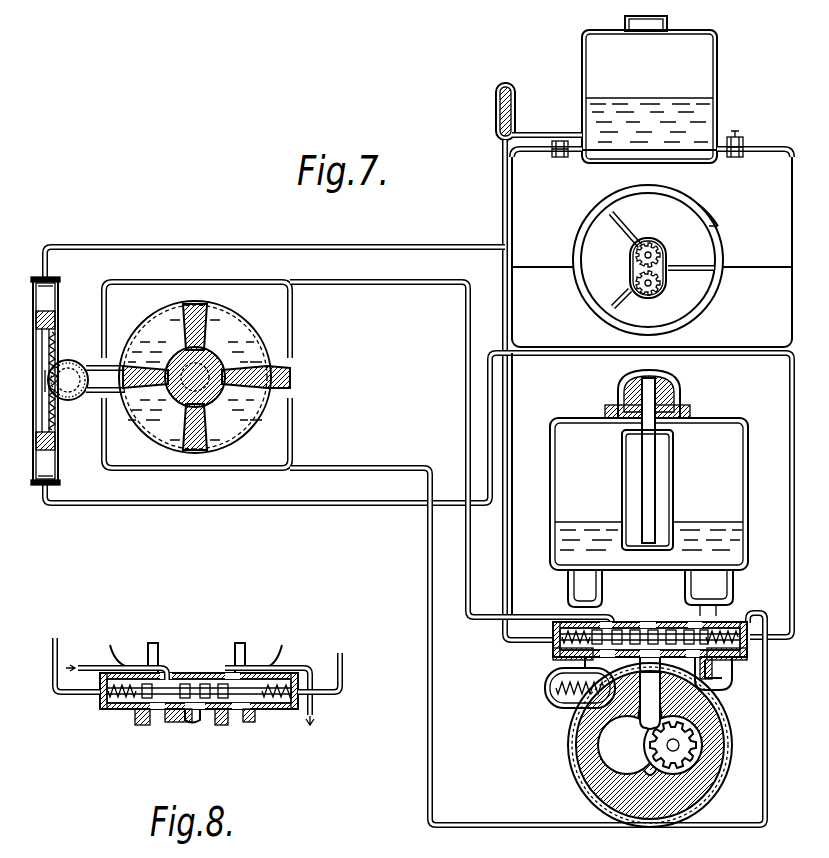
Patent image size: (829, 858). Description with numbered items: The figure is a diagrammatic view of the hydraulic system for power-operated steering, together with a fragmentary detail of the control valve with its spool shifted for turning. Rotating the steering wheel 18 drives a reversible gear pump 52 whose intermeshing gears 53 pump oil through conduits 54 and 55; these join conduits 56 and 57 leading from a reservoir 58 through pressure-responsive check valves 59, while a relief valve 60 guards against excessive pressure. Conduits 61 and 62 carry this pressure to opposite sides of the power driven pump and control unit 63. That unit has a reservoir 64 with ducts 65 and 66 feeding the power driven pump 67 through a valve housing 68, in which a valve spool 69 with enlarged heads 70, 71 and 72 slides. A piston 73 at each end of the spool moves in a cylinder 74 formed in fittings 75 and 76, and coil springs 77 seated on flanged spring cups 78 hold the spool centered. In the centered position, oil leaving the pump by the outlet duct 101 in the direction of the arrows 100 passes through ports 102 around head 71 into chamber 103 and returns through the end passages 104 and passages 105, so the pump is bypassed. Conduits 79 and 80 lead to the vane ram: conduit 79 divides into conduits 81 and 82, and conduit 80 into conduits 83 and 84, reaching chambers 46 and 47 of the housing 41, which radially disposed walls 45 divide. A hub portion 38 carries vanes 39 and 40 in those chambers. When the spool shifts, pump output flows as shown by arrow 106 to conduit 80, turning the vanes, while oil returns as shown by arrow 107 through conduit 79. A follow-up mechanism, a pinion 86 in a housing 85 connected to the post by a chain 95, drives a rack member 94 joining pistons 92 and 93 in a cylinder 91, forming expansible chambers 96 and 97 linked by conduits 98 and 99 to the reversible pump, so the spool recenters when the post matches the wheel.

In FIG. 7, the steering wheel 18 is at (596, 222).
In FIG. 7, the hub portion 38 is at (226, 358).
In FIG. 7, the vane 39 is at (210, 326).
In FIG. 7, the vane 40 is at (212, 441).
In FIG. 7, the housing 41 is at (140, 308).
In FIG. 7, the radially disposed walls 45 is at (272, 390).
In FIG. 7, the chamber 46 is at (173, 318).
In FIG. 7, the chamber 47 is at (172, 436).
In FIG. 7, the reversible gear pump 52 is at (667, 278).
In FIG. 7, the intermeshing gears 53 is at (660, 250).
In FIG. 7, the conduit 54 is at (745, 265).
In FIG. 7, the conduit 55 is at (548, 265).
In FIG. 7, the conduit 56 is at (789, 183).
In FIG. 7, the conduit 57 is at (503, 178).
In FIG. 7, the reservoir 58 is at (717, 55).
In FIG. 7, the pressure-responsive check valves 59 is at (560, 159).
In FIG. 7, the relief valve 60 is at (516, 118).
In FIG. 7, the conduit 61 is at (790, 381).
In FIG. 7, the conduit 62 is at (512, 426).
In FIG. 7, the power driven pump and control unit 63 is at (562, 723).
In FIG. 7, the reservoir 64 is at (748, 488).
In FIG. 7, the duct 65 is at (734, 590).
In FIG. 7, the duct 66 is at (648, 626).
In FIG. 7, the power driven pump 67 is at (722, 722).
In FIG. 7, the valve housing 68 is at (702, 660).
In FIG. 8, the valve housing 68 is at (256, 711).
In FIG. 7, the valve spool 69 is at (672, 662).
In FIG. 7, the enlarged head 70 is at (624, 630).
In FIG. 8, the enlarged head 70 is at (186, 684).
In FIG. 7, the enlarged head 71 is at (661, 630).
In FIG. 8, the enlarged head 71 is at (210, 682).
In FIG. 7, the enlarged head 72 is at (676, 622).
In FIG. 7, the piston 73 is at (566, 653).
In FIG. 7, the cylinder 74 is at (558, 656).
In FIG. 7, the fitting 75 is at (761, 661).
In FIG. 7, the fitting 76 is at (761, 614).
In FIG. 7, the coil springs 77 is at (560, 634).
In FIG. 7, the spring cups 78 is at (734, 622).
In FIG. 7, the conduit 79 is at (473, 556).
In FIG. 8, the conduit 79 is at (86, 666).
In FIG. 7, the conduit 80 is at (429, 686).
In FIG. 8, the conduit 80 is at (301, 666).
In FIG. 7, the conduit 81 is at (238, 282).
In FIG. 7, the conduit 82 is at (293, 353).
In FIG. 7, the conduit 83 is at (289, 433).
In FIG. 7, the conduit 84 is at (212, 470).
In FIG. 7, the housing 85 is at (85, 396).
In FIG. 7, the pinion 86 is at (106, 360).
In FIG. 7, the cylinder 91 is at (58, 345).
In FIG. 7, the piston 92 is at (60, 318).
In FIG. 7, the piston 93 is at (57, 441).
In FIG. 7, the rack member 94 is at (66, 364).
In FIG. 7, the chain 95 is at (98, 396).
In FIG. 7, the expansible chamber 96 is at (60, 296).
In FIG. 7, the expansible chamber 97 is at (48, 480).
In FIG. 7, the conduit 98 is at (243, 247).
In FIG. 7, the conduit 99 is at (231, 504).
In FIG. 7, the arrows 100 is at (655, 764).
In FIG. 7, the outlet duct 101 is at (656, 706).
In FIG. 8, the outlet duct 101 is at (196, 713).
In FIG. 7, the ports 102 is at (656, 659).
In FIG. 7, the chamber 103 is at (600, 614).
In FIG. 7, the end passages 104 is at (560, 676).
In FIG. 8, the end passages 104 is at (136, 714).
In FIG. 7, the passages 105 is at (592, 779).
In FIG. 8, the passages 105 is at (160, 710).
In FIG. 7, the arrow 106 is at (44, 385).
In FIG. 8, the arrow 106 is at (232, 711).
In FIG. 8, the arrow 107 is at (162, 672).